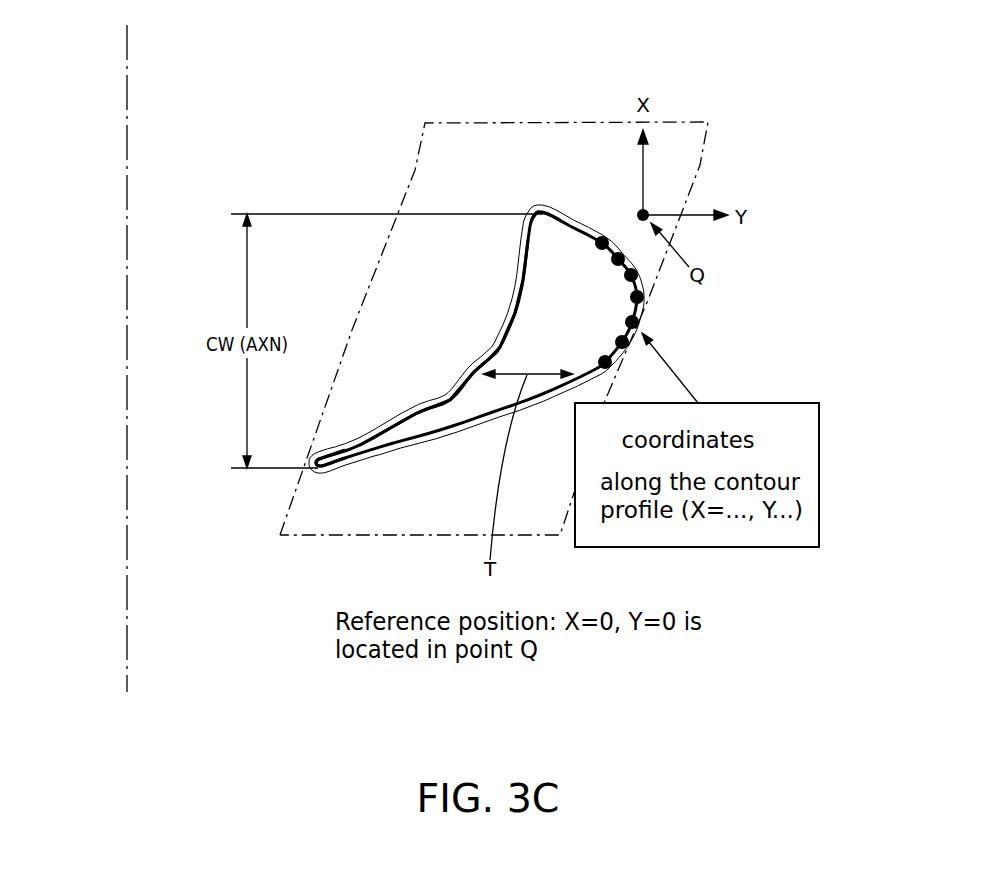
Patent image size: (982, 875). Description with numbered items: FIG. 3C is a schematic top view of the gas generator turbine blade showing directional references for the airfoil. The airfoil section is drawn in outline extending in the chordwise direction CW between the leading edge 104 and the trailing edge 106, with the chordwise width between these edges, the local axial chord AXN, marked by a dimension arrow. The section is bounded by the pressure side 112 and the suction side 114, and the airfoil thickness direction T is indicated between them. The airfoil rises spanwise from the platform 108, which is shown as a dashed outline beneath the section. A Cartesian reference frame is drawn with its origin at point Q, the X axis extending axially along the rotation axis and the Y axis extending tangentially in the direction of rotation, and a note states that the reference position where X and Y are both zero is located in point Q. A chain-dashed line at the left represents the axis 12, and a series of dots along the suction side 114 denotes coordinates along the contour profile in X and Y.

The axis of rotation 12 is at (125, 510).
The leading edge 104 is at (535, 198).
The trailing edge 106 is at (312, 476).
The platform 108 is at (700, 152).
The pressure side 112 is at (522, 315).
The suction side 114 is at (642, 312).